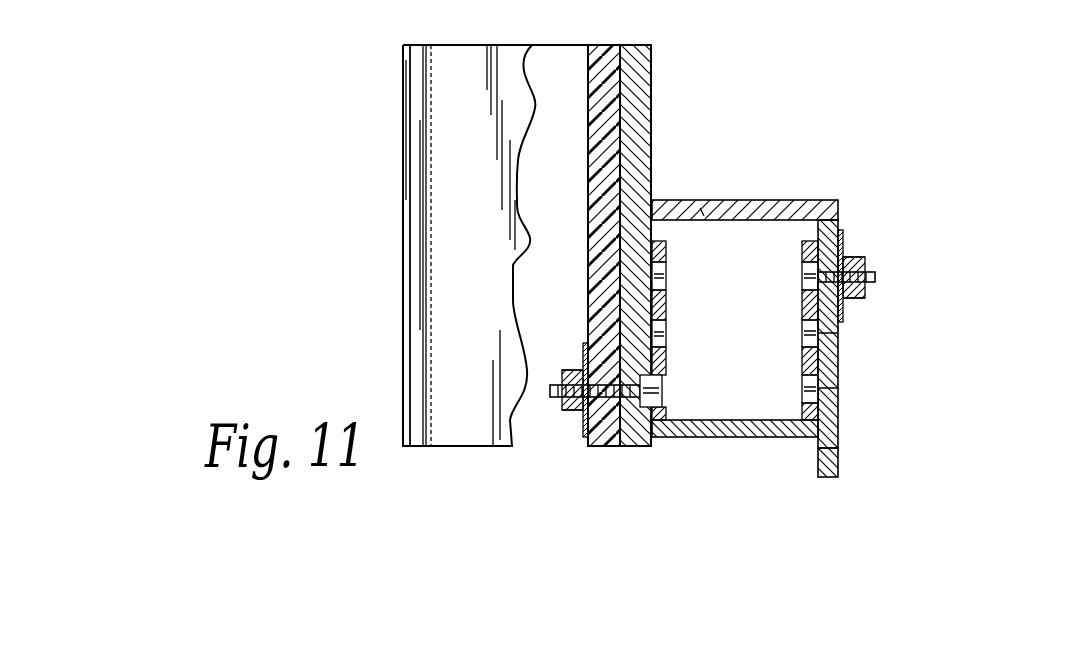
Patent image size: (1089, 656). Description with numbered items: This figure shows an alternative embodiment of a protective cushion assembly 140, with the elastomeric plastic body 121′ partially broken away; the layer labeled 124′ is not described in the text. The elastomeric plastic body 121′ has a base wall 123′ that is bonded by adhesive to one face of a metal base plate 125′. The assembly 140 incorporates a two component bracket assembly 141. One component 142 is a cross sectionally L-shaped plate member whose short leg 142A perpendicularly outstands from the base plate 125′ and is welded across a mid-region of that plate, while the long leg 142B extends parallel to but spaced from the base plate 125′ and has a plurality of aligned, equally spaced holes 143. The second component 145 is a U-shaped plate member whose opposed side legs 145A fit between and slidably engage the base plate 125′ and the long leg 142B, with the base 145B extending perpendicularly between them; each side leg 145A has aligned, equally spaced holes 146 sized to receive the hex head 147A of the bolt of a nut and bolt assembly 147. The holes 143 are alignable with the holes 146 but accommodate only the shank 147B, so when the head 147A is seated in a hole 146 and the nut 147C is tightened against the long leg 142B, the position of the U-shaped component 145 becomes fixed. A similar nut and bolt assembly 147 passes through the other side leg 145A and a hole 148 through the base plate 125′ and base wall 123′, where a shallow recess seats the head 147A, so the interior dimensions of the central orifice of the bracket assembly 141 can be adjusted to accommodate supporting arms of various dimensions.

The elastomeric plastic body 121′ is at (480, 45).
The base wall 123′ is at (588, 98).
The inner layer 124′ is at (470, 103).
The metal base plate 125′ is at (642, 100).
The protective cushion assembly 140 is at (705, 160).
The bracket assembly 141 is at (855, 185).
The L-shaped component 142 is at (760, 200).
The short leg 142A is at (702, 208).
The long leg 142B is at (843, 235).
The holes 143 is at (838, 388).
The U-shaped component 145 is at (730, 437).
The side legs 145A is at (803, 323).
The base 145B is at (800, 440).
The holes 146 is at (808, 393).
The nut and bolt assembly 147 is at (870, 270).
The hex head 147A is at (803, 278).
The shank 147B is at (875, 277).
The nut 147C is at (857, 300).
The hole 148 is at (582, 420).